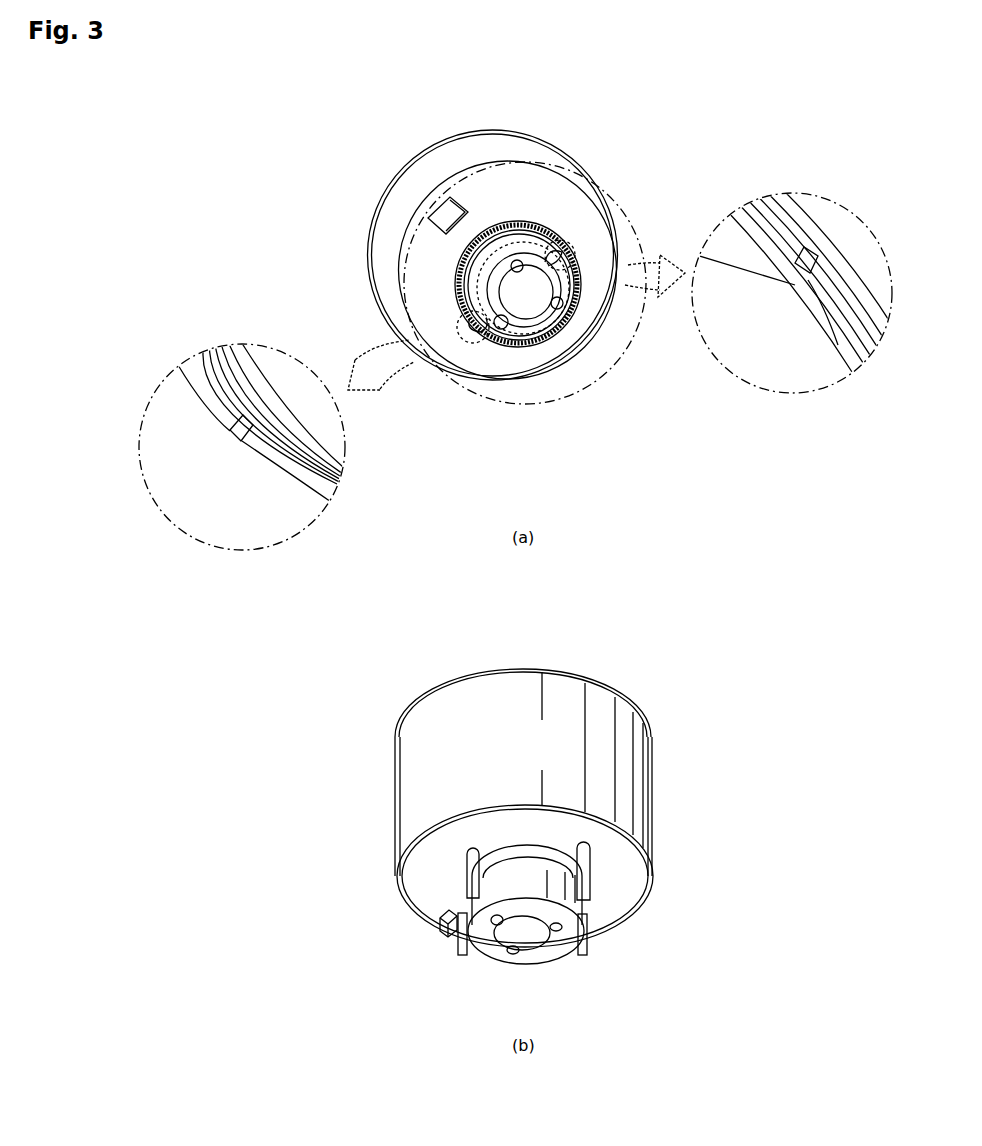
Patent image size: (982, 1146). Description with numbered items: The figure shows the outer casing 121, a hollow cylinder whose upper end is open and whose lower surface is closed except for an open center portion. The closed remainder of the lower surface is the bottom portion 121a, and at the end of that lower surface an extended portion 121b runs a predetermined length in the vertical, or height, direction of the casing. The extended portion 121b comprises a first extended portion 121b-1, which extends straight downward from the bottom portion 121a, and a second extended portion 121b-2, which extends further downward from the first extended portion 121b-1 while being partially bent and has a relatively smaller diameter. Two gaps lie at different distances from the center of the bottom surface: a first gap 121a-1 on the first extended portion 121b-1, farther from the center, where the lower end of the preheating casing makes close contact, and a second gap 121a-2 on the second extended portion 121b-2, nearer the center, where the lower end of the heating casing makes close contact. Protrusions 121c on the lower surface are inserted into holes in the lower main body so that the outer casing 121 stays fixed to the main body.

The outer casing 121 is at (337, 162).
The bottom portion 121a is at (430, 893).
The first gap 121a-1 is at (230, 432).
The second gap 121a-2 is at (796, 270).
The extended portion 121b is at (638, 898).
The first extended portion 121b-1 is at (592, 860).
The second extended portion 121b-2 is at (590, 897).
The protrusions 121c is at (455, 940).